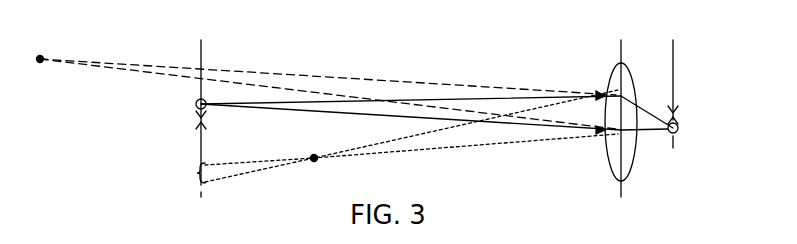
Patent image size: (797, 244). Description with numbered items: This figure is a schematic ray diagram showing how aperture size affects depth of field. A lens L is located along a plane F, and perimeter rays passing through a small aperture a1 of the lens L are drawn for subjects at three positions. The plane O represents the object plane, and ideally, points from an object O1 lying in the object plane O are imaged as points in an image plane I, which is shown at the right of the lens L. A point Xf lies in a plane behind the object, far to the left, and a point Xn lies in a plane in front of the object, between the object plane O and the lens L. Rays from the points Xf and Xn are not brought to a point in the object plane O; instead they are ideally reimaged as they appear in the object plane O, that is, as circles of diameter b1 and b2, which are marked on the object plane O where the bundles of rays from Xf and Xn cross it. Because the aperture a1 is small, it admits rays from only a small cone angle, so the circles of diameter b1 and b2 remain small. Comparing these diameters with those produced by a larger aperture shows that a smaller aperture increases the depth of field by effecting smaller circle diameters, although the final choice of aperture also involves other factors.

The point behind the object Xf is at (322, 93).
The object plane O is at (202, 48).
The object O1 is at (205, 124).
The circle diameter b1 is at (203, 78).
The circle diameter b2 is at (189, 175).
The point in front of the object Xn is at (411, 139).
The lens plane F is at (622, 55).
The lens L is at (630, 75).
The image plane I is at (674, 57).
The small aperture a1 is at (621, 117).